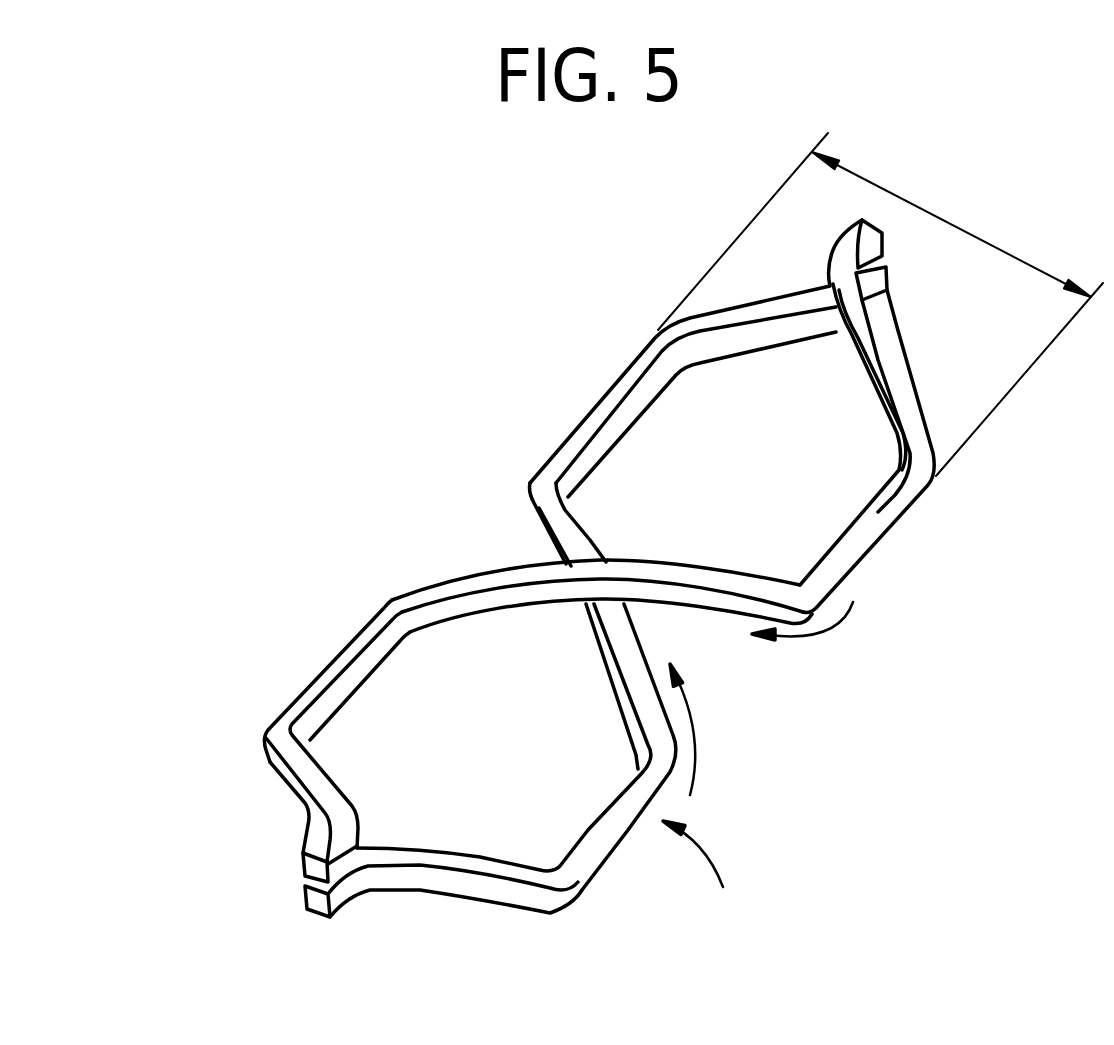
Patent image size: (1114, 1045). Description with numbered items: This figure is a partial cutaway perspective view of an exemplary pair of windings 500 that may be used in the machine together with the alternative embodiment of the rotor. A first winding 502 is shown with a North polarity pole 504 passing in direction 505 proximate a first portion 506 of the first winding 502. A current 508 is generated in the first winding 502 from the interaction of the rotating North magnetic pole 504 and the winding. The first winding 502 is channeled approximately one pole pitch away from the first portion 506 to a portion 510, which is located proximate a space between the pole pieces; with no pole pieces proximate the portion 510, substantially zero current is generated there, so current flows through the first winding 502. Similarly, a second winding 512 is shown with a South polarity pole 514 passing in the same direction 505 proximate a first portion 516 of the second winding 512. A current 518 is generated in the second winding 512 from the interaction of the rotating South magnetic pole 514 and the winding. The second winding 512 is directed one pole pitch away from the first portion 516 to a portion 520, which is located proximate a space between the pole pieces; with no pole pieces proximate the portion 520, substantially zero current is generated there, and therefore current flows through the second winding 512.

The pair of windings 500 is at (412, 350).
The first winding 502 is at (363, 889).
The North polarity pole 504 is at (635, 902).
The direction 505 is at (715, 855).
The first portion of winding 506 is at (590, 822).
The current 508 is at (694, 740).
The portion 510 is at (590, 405).
The second winding 512 is at (393, 600).
The South polarity pole 514 is at (960, 528).
The first portion 516 is at (870, 550).
The current 518 is at (823, 632).
The portion 520 is at (322, 668).